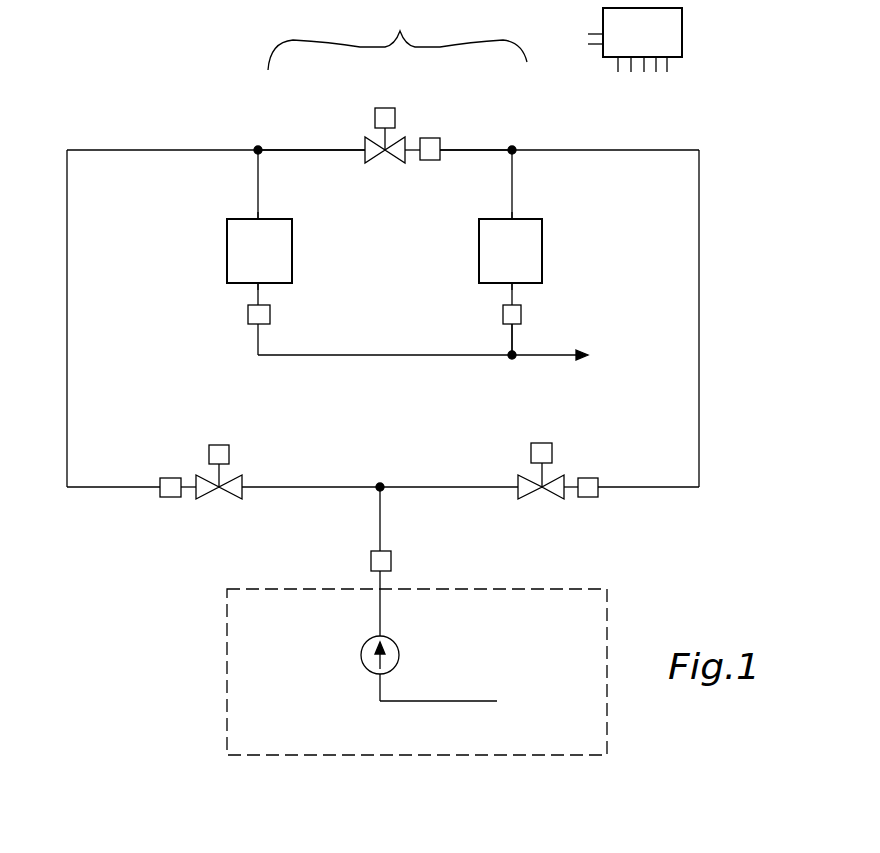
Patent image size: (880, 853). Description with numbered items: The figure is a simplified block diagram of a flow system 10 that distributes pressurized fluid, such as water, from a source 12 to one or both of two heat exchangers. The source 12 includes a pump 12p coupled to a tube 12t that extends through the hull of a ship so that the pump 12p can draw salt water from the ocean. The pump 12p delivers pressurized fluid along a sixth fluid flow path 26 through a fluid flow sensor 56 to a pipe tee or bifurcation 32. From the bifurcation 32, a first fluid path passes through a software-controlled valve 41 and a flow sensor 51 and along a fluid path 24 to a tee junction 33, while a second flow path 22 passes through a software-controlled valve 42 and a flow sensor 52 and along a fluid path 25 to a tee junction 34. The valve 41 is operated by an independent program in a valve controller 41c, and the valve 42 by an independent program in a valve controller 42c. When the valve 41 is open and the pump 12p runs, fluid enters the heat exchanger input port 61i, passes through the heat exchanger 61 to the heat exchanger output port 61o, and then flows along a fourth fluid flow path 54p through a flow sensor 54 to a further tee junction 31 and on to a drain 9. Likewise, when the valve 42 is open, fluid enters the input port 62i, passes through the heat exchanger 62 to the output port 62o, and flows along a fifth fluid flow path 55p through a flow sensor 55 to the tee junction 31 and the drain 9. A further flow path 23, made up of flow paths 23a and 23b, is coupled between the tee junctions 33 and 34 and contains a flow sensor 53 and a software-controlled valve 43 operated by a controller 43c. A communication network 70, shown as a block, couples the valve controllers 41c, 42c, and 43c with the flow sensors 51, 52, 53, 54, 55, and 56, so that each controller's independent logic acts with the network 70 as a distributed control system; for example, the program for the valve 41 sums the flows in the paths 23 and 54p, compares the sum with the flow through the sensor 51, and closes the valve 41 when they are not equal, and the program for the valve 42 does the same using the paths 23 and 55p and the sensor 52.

The drain 9 is at (586, 356).
The flow system 10 is at (106, 686).
The source 12 is at (284, 631).
The pump 12p is at (399, 656).
The tube 12t is at (452, 703).
The second flow path 22 is at (699, 412).
The further flow path 23 is at (397, 37).
The flow path 23a is at (330, 150).
The flow path 23b is at (488, 150).
The fluid path 24 is at (258, 199).
The fluid path 25 is at (512, 199).
The sixth fluid flow path 26 is at (380, 522).
The tee junction 31 is at (512, 359).
The pipe tee 32 is at (380, 483).
The tee junction 33 is at (258, 146).
The tee junction 34 is at (512, 146).
The software-controlled valve 41 is at (219, 493).
The valve controller 41c is at (219, 445).
The software-controlled valve 42 is at (542, 493).
The valve controller 42c is at (542, 443).
The software-controlled valve 43 is at (385, 156).
The controller 43c is at (385, 108).
The flow sensor 51 is at (170, 478).
The flow sensor 52 is at (588, 478).
The flow sensor 53 is at (430, 138).
The flow sensor 54 is at (270, 315).
The fourth fluid flow path 54p is at (356, 357).
The flow sensor 55 is at (503, 315).
The fifth fluid flow path 55p is at (514, 343).
The fluid flow sensor 56 is at (391, 562).
The heat exchanger 61 is at (292, 252).
The heat exchanger input port 61i is at (256, 217).
The heat exchanger output port 61o is at (255, 288).
The heat exchanger 62 is at (542, 252).
The input port 62i is at (515, 217).
The output port 62o is at (514, 288).
The communication network 70 is at (603, 24).